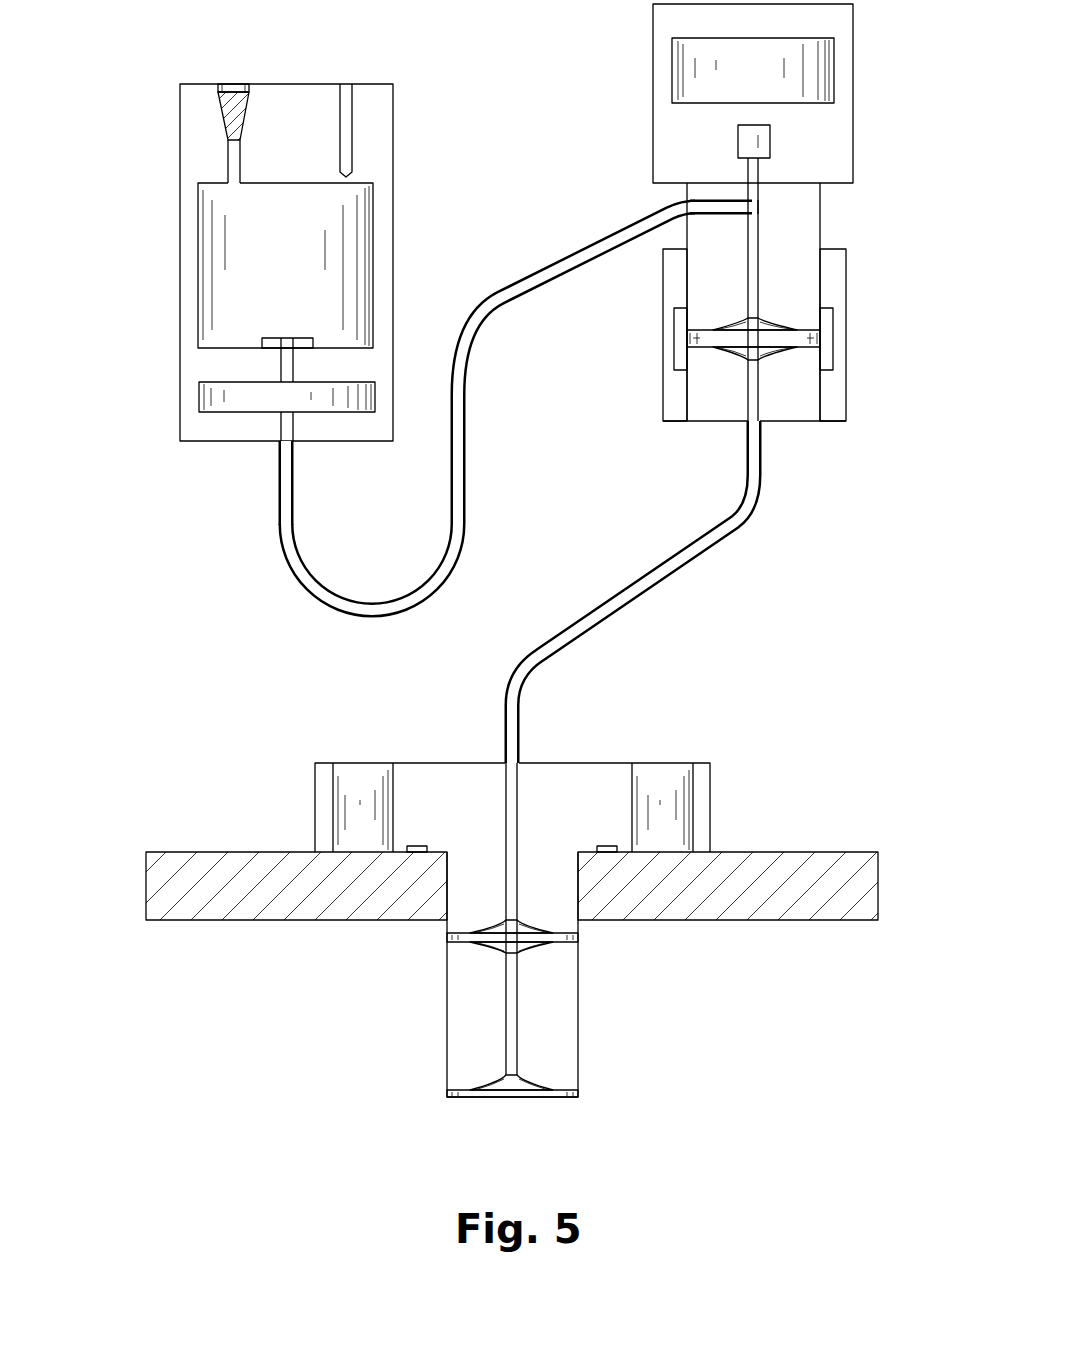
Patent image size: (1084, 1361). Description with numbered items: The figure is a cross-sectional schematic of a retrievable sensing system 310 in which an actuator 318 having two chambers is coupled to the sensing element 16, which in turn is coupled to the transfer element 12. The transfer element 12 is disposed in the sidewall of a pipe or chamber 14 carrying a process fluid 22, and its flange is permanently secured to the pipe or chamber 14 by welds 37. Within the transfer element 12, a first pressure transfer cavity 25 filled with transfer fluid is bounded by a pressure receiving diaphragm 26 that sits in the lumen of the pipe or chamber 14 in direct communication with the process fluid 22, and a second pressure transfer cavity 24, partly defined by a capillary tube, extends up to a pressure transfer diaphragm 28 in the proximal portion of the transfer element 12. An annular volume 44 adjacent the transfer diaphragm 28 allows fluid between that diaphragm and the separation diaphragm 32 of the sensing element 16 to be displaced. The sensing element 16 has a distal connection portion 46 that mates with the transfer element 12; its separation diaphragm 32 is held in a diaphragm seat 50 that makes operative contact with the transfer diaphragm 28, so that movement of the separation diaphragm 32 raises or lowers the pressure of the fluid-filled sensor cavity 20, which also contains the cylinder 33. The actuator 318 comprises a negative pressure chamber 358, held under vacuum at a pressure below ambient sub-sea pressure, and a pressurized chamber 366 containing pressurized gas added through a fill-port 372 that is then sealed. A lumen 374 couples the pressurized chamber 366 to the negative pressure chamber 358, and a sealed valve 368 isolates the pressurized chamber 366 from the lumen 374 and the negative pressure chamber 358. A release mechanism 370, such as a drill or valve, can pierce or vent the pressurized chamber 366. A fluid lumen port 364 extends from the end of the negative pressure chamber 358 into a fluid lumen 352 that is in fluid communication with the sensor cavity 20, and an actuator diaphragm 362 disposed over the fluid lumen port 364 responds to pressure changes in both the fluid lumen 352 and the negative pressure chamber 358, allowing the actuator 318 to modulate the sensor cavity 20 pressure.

The fluid supply system 310 is at (110, 82).
The actuator 318 is at (150, 176).
The fill-port 372 is at (233, 84).
The release mechanism 370 is at (353, 122).
The pressurized chamber 366 is at (305, 279).
The sealed valve 368 is at (262, 338).
The lumen 374 is at (293, 366).
The negative pressure chamber 358 is at (199, 396).
The actuator diaphragm 362 is at (322, 415).
The fluid lumen port 364 is at (278, 474).
The fluid lumen 352 is at (292, 572).
The sensing element 16 is at (872, 112).
The pump cylinder 33 is at (836, 58).
The sensor cavity 20 is at (760, 207).
The distal connection portion 46 is at (823, 258).
The annular volume 44 is at (690, 338).
The diaphragm seat 50 is at (715, 312).
The separation diaphragm 32 is at (805, 330).
The pressure transfer diaphragm 28 is at (800, 348).
The second pressure transfer cavity 24 is at (720, 555).
The transfer element 12 is at (778, 708).
The pipe or chamber 14 is at (848, 862).
The welds 37 is at (372, 775).
The process fluid 22 is at (716, 1039).
The first pressure transfer cavity 25 is at (506, 1028).
The pressure receiving diaphragm 26 is at (556, 1097).